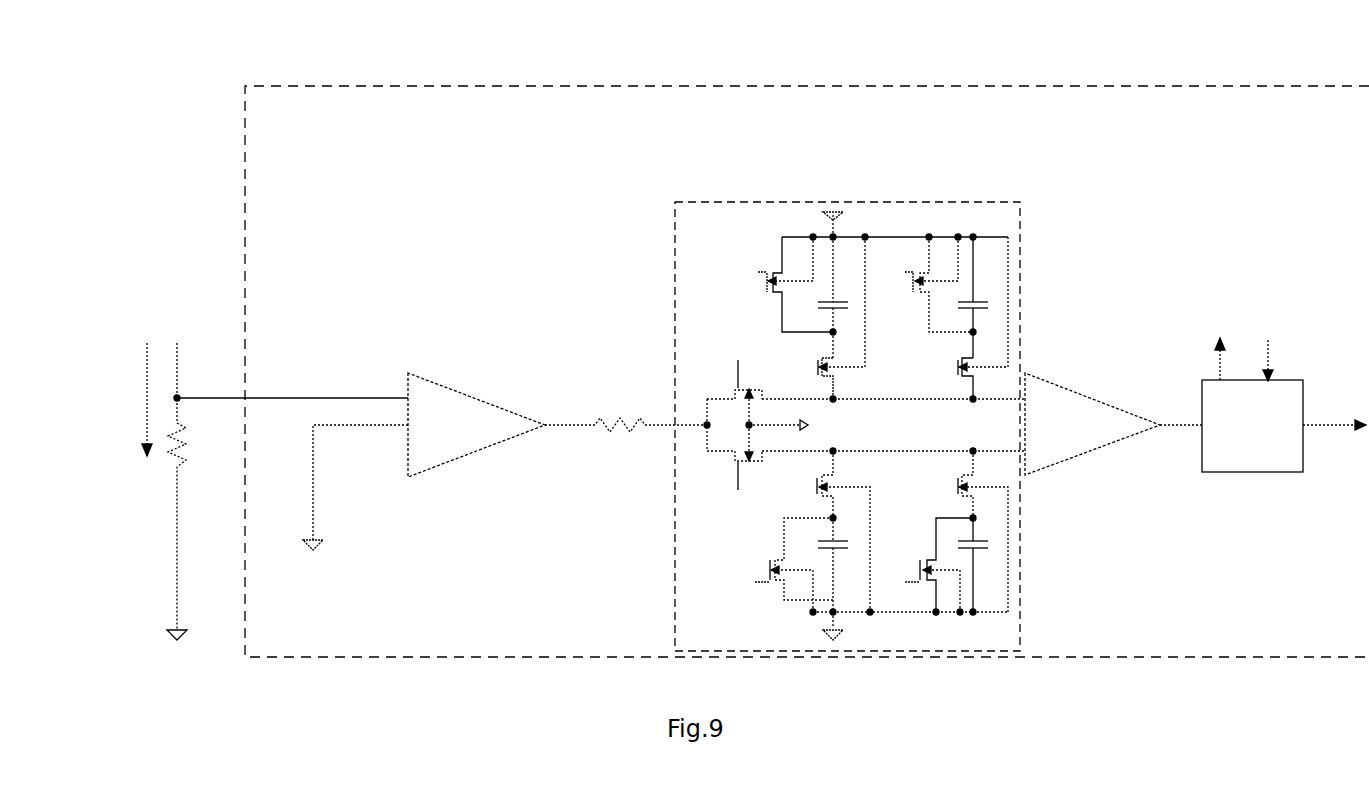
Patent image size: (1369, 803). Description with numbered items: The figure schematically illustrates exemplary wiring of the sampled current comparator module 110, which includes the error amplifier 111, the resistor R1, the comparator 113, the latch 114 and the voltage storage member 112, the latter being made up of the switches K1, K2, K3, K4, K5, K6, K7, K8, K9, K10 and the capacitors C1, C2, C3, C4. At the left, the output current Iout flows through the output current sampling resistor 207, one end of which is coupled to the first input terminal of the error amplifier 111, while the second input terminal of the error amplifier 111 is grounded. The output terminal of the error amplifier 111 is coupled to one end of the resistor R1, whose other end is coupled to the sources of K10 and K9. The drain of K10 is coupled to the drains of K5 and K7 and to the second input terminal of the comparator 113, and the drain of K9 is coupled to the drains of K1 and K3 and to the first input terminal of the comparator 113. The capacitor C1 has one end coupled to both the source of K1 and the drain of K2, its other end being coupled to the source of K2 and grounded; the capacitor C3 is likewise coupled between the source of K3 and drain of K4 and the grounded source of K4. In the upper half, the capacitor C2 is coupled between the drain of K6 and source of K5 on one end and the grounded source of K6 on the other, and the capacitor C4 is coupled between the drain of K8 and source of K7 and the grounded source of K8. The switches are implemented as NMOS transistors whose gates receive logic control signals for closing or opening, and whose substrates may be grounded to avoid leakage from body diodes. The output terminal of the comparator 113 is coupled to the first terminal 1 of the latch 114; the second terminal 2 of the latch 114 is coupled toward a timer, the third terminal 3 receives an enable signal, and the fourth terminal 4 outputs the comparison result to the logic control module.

The sampled current comparator module 110 is at (600, 86).
The voltage storage member 112 is at (860, 202).
The error amplifier 111 is at (361, 461).
The comparator 113 is at (1092, 424).
The latch 114 is at (1252, 426).
The output current sampling resistor 207 is at (165, 491).
The resistor R1 is at (626, 415).
The output current Iout is at (123, 399).
The switch K1 is at (825, 531).
The switch K2 is at (781, 563).
The switch K3 is at (964, 531).
The switch K4 is at (927, 563).
The switch K5 is at (820, 318).
The switch K6 is at (782, 284).
The switch K7 is at (960, 318).
The switch K8 is at (925, 284).
The switch K9 is at (732, 457).
The switch K10 is at (727, 392).
The capacitor C1 is at (838, 565).
The capacitor C2 is at (838, 297).
The capacitor C3 is at (978, 565).
The capacitor C4 is at (978, 297).
The comparator output signal 1 is at (1181, 416).
The latch output / reset signal 2 is at (1227, 358).
The latch clock signal 3 is at (1274, 360).
The latch output signal 4 is at (1334, 434).